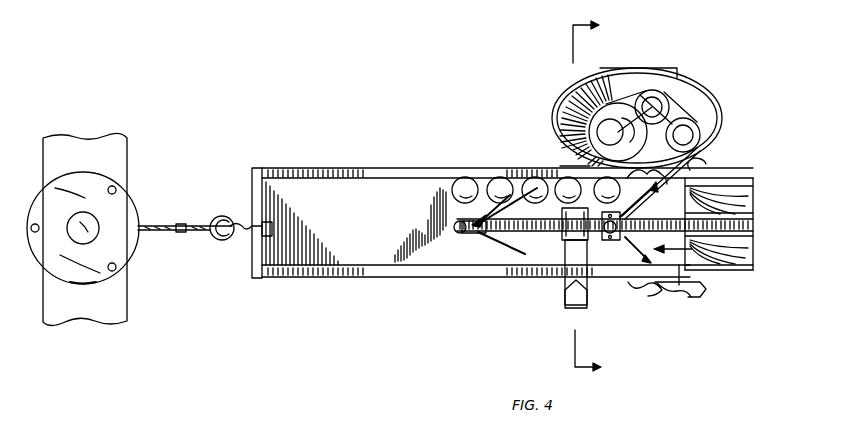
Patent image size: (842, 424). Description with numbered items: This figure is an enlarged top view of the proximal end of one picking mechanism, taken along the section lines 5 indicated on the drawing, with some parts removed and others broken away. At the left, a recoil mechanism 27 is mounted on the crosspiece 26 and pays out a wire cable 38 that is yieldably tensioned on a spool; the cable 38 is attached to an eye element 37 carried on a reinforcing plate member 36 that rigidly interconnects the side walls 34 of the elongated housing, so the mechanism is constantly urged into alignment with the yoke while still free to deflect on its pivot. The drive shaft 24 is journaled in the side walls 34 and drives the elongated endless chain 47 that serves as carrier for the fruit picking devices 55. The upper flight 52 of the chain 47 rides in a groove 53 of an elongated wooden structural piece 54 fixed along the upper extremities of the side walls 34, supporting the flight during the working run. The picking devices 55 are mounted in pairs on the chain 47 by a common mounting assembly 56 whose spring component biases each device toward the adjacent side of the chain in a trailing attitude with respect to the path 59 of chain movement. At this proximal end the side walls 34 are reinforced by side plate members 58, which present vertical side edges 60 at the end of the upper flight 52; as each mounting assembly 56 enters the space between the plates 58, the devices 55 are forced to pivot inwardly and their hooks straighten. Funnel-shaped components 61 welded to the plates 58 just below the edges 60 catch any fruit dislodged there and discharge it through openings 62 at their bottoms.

The section line 5- 5 is at (592, 196).
The drive shaft 24 is at (562, 294).
The crosspiece 26 is at (127, 155).
The recoil mechanism 27 is at (138, 203).
The side walls 34 is at (350, 265).
The reinforcing plate member 36 is at (226, 216).
The eye element 37 is at (220, 242).
The wire cable 38 is at (150, 233).
The endless chain 47 is at (758, 218).
The upper flight 52 is at (755, 195).
The groove 53 is at (758, 232).
The elongated wooden structural piece 54 is at (758, 265).
The picking devices 55 is at (722, 108).
The common mounting assembly 56 is at (655, 205).
The side plate members 58 is at (318, 168).
The path of movement 59 is at (681, 286).
The vertical side edges 60 is at (704, 166).
The funnel-shaped components 61 is at (640, 68).
The openings 62 is at (590, 132).